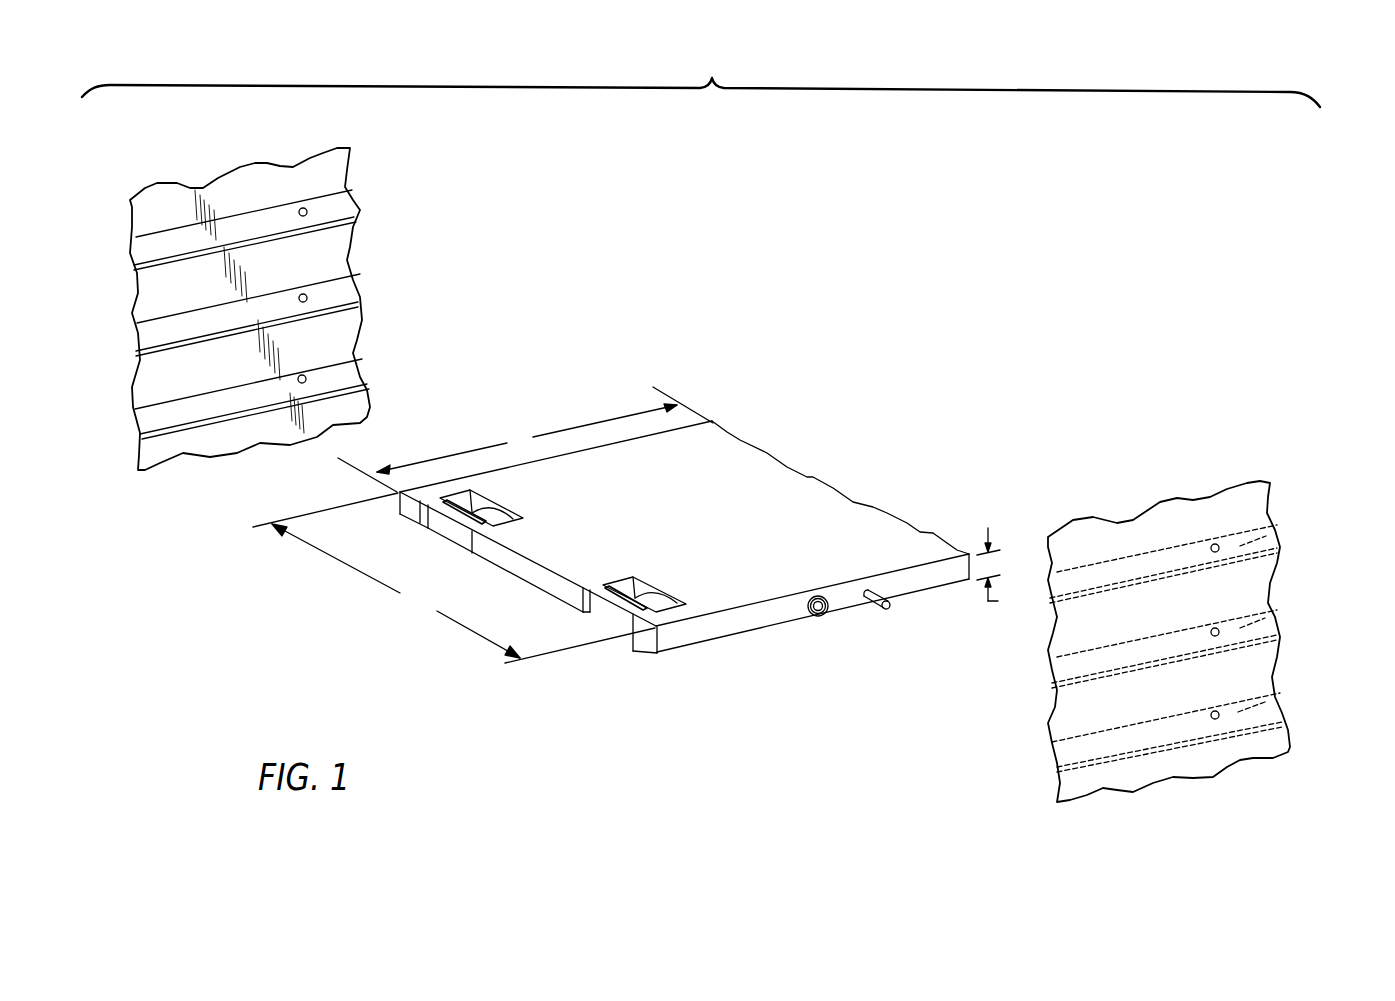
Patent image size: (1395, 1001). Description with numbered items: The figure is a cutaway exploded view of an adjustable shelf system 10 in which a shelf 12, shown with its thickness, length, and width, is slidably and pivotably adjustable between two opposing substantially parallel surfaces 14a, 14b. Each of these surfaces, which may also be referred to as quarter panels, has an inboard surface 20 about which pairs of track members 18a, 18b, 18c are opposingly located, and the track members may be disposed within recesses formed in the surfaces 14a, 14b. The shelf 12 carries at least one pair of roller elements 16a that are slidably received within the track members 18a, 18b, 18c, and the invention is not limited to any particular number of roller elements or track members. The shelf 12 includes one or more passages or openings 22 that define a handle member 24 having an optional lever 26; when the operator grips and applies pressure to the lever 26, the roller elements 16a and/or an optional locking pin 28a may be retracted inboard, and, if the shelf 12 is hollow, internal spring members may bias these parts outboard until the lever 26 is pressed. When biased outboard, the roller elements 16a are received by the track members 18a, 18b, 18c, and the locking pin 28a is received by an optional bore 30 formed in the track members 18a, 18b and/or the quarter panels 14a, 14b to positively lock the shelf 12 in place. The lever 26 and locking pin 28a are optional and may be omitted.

The adjustable shelf system 10 is at (701, 77).
The shelf 12 is at (684, 516).
The opposing substantially parallel surface 14a is at (203, 168).
The opposing substantially parallel surface 14b is at (1166, 484).
The roller element 16a is at (801, 614).
The track member 18a is at (342, 372).
The track member 18b is at (342, 205).
The track member 18c is at (342, 288).
The inboard surface 20 is at (160, 297).
The passage or opening 22 is at (487, 505).
The handle member 24 is at (450, 525).
The lever 26 is at (523, 520).
The locking pin 28a is at (877, 607).
The bore 30 is at (305, 382).